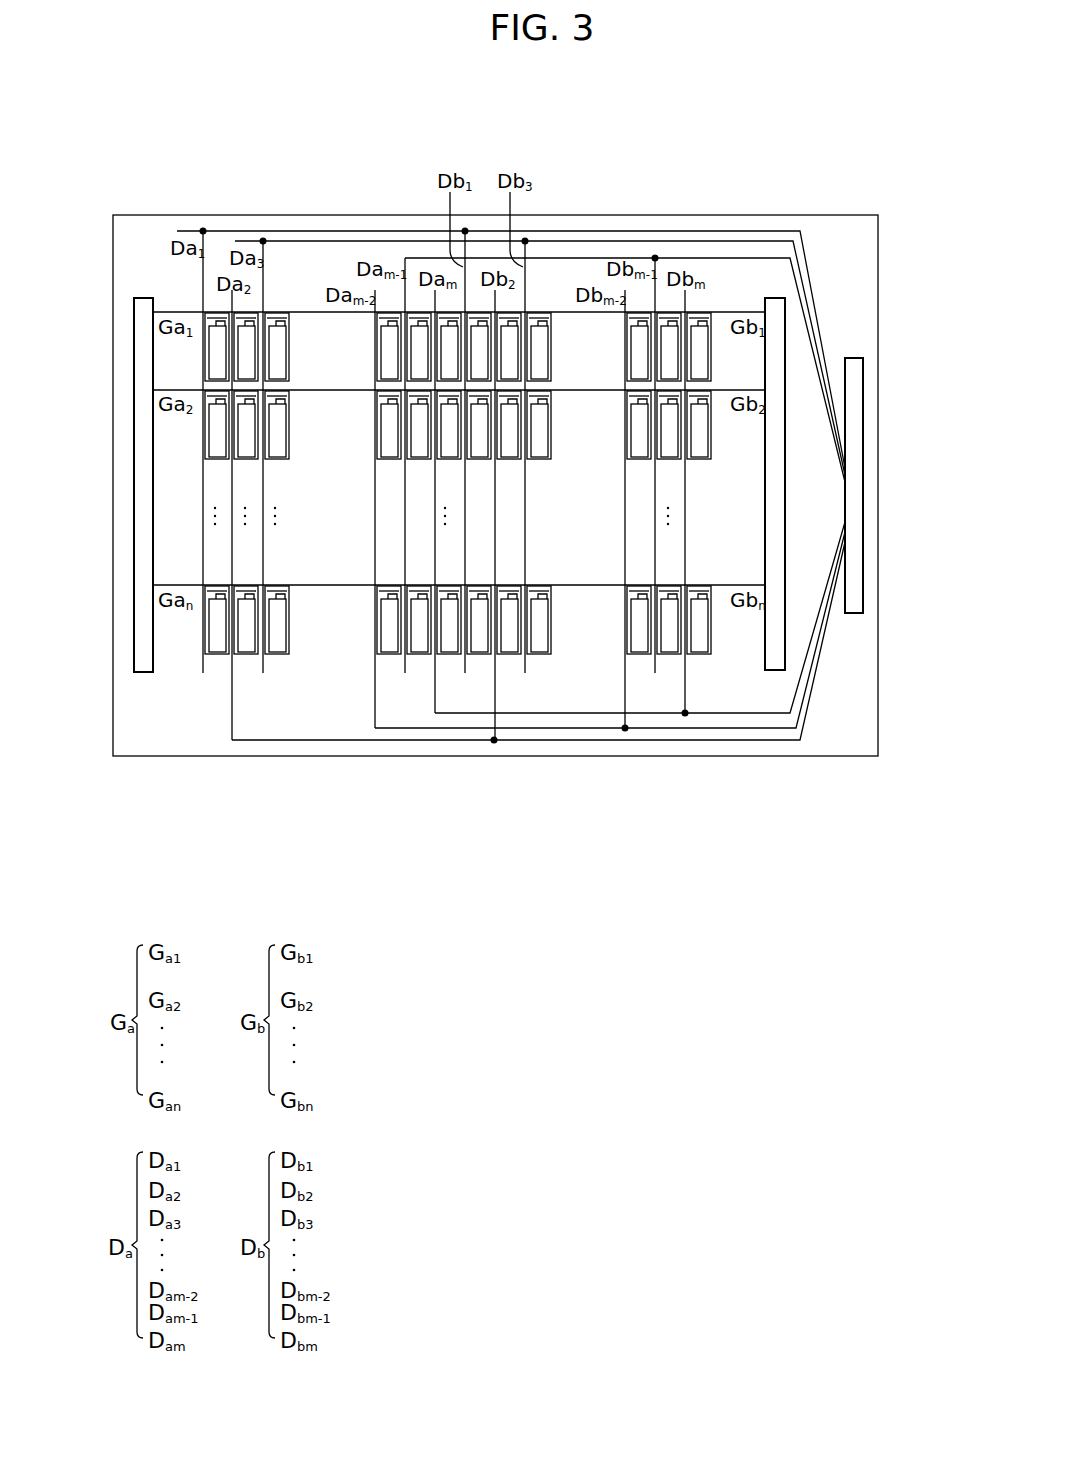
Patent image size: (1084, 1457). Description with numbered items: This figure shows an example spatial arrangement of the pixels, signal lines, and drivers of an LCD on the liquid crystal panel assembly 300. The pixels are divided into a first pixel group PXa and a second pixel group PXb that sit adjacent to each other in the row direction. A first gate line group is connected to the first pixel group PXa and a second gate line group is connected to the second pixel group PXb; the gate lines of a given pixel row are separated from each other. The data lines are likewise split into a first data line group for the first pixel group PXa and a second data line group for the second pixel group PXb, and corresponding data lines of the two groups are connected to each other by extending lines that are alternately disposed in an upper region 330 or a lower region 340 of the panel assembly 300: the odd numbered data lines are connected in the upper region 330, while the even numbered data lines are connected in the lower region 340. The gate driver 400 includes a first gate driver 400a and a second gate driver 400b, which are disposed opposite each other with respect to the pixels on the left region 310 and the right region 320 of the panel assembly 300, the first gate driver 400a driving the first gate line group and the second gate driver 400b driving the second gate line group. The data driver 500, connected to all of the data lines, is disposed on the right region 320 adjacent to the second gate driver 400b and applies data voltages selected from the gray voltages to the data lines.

The liquid crystal panel assembly 300 is at (140, 215).
The left region 310 is at (134, 514).
The right region 320 is at (785, 537).
The upper region 330 is at (293, 266).
The lower region 340 is at (285, 720).
The gate driver 400 is at (499, 389).
The first gate driver 400a is at (100, 485).
The second gate driver 400b is at (858, 484).
The data driver 500 is at (863, 488).
The first pixel group PXa is at (460, 680).
The second pixel group PXb is at (467, 680).